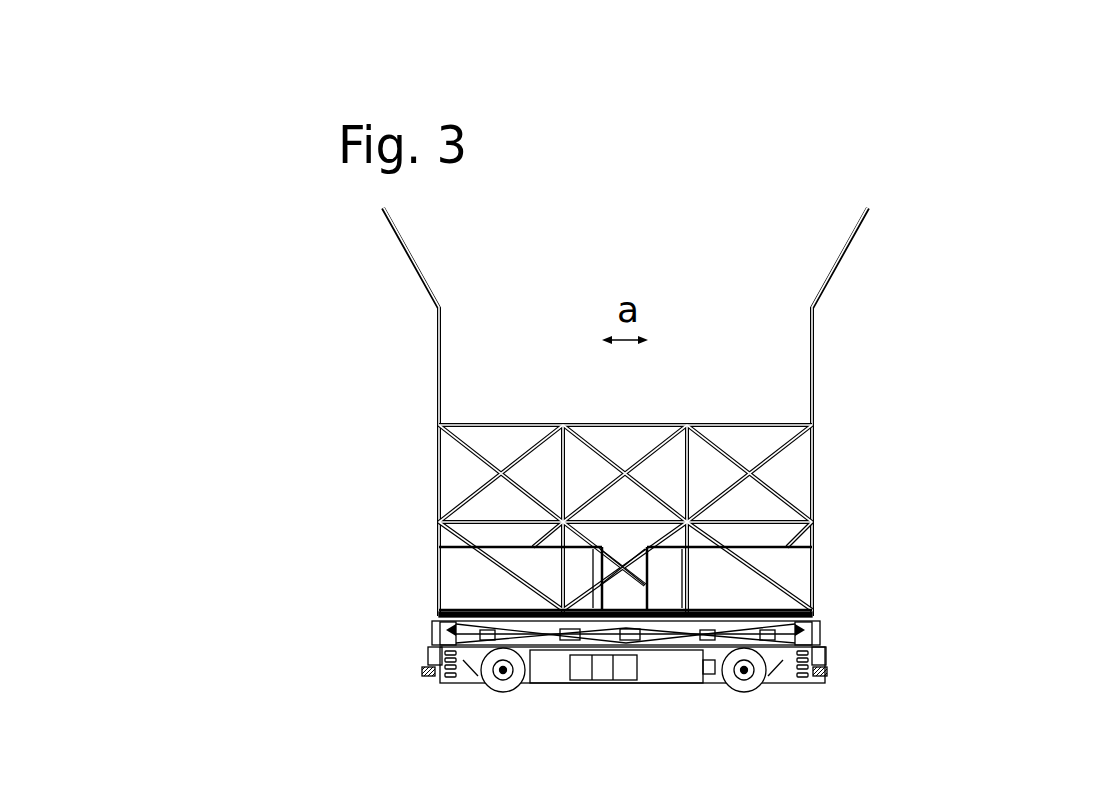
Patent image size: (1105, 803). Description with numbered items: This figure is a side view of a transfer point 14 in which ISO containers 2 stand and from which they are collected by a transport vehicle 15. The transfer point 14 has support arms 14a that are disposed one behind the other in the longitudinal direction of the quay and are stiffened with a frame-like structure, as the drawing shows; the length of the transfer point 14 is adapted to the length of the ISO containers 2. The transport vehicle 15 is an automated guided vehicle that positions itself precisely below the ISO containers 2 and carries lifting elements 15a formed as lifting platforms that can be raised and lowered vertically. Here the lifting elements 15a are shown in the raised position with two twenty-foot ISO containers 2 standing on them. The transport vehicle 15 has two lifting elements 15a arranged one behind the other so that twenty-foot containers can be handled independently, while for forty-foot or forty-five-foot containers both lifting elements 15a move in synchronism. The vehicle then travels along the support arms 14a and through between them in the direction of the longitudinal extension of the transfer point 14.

The transfer point 14 is at (608, 353).
The support arm 14a is at (608, 412).
The ISO container 2 is at (612, 577).
The transport vehicle 15 is at (610, 696).
The lifting element 15a is at (610, 672).